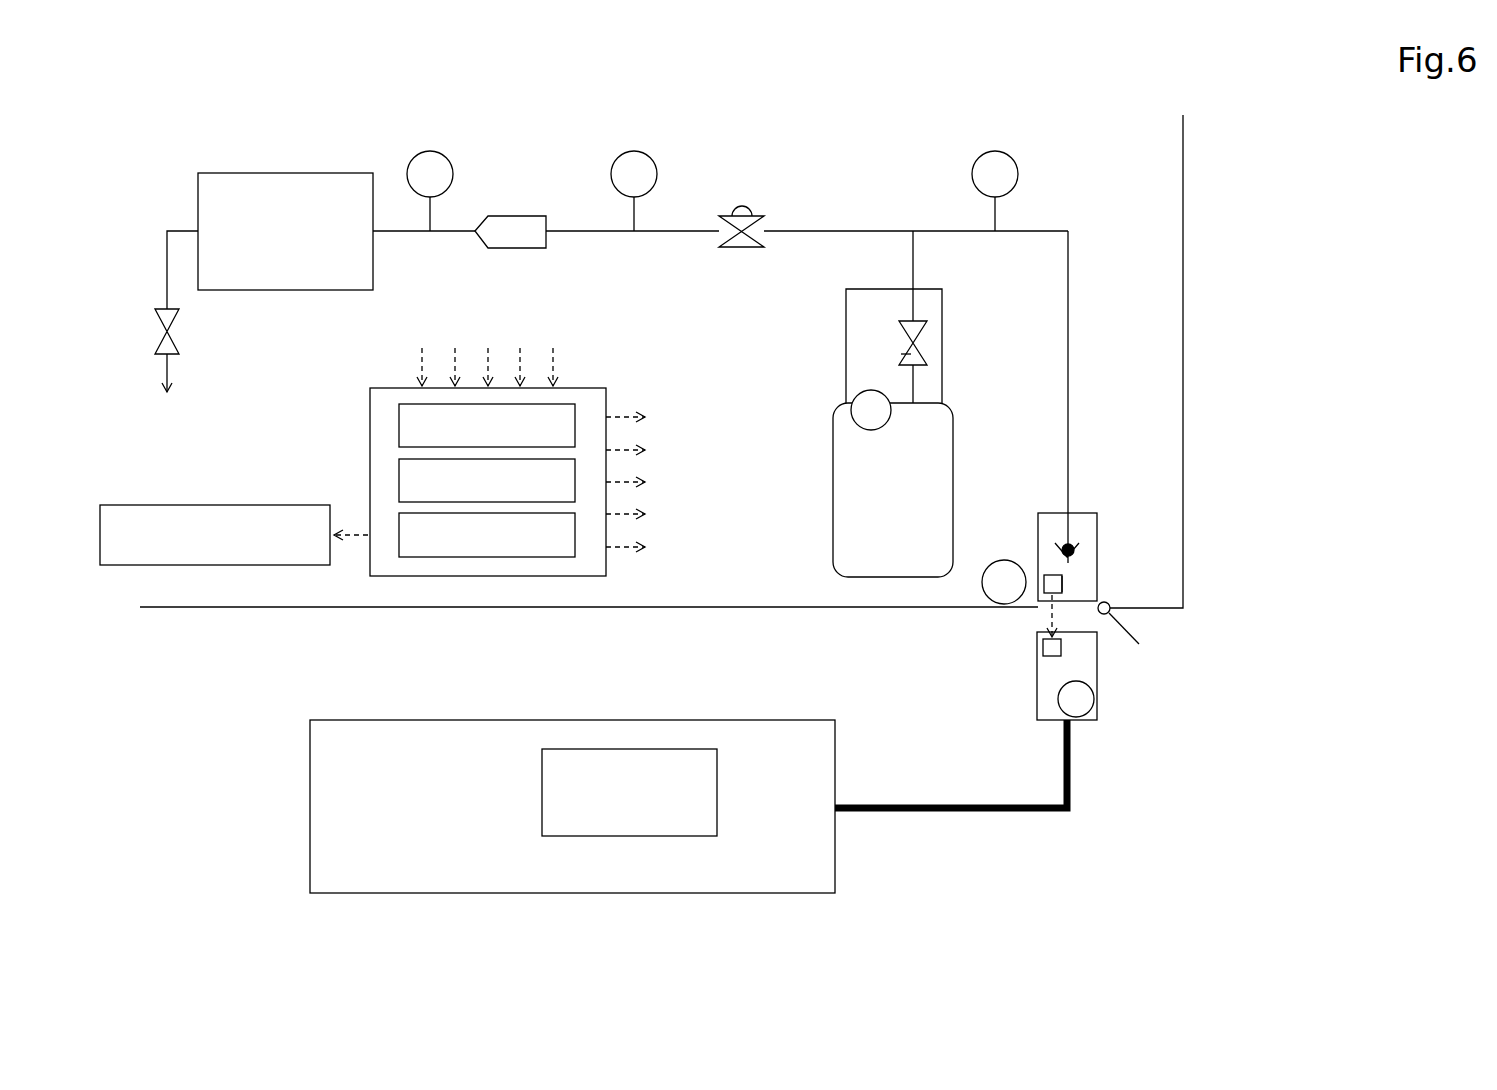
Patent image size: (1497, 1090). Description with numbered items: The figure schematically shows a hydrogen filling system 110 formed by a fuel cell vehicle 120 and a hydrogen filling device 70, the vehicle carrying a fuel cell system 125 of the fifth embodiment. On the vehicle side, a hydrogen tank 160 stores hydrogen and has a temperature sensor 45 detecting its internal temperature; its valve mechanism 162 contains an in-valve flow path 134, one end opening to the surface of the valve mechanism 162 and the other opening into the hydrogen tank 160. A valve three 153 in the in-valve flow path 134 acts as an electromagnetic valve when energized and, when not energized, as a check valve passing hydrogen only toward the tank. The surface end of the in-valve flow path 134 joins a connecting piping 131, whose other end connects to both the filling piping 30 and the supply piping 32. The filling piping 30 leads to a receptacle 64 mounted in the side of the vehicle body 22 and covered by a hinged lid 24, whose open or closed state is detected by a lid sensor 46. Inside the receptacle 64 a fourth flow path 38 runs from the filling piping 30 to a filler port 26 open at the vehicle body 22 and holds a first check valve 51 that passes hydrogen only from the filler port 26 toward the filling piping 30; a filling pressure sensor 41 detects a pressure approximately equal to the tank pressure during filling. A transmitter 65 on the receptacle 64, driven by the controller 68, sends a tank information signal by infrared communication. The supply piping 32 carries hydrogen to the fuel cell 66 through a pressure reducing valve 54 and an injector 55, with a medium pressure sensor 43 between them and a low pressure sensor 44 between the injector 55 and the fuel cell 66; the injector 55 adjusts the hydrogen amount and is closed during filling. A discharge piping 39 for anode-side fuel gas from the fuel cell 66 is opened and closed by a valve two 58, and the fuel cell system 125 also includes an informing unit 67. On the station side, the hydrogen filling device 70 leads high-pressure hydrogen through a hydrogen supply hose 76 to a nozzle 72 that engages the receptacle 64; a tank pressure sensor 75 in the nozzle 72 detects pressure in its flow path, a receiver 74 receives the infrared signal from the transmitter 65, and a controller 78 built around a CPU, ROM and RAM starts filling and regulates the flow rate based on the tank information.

The vehicle body 22 is at (1183, 316).
The lid 24 is at (1130, 632).
The filler port 26 is at (1095, 620).
The filling piping 30 is at (1068, 384).
The supply piping 32 is at (593, 233).
The fourth flow path 38 is at (1068, 582).
The discharge piping 39 is at (165, 246).
The filling pressure sensor 41 is at (993, 151).
The medium pressure sensor 43 is at (632, 151).
The low pressure sensor 44 is at (427, 151).
The temperature sensor 45 is at (864, 429).
The lid sensor 46 is at (985, 597).
The first check valve 51 is at (1070, 543).
The pressure reducing valve 54 is at (743, 206).
The injector 55 is at (512, 216).
The valve two 58 is at (178, 331).
The receptacle 64 is at (1097, 556).
The transmitter 65 is at (1044, 575).
The fuel cell 66 is at (283, 173).
The informing unit 67 is at (234, 505).
The controller 68 is at (380, 388).
The hydrogen filling device 70 is at (288, 757).
The nozzle 72 is at (1037, 703).
The receiver 74 is at (1043, 646).
The tank pressure sensor 75 is at (1094, 700).
The hydrogen supply hose 76 is at (1071, 768).
The controller 78 is at (717, 790).
The hydrogen filling system 110 is at (1290, 130).
The fuel cell vehicle 120 is at (1192, 268).
The fuel cell system 125 is at (1110, 100).
The connecting piping 131 is at (913, 258).
The in-valve flow path 134 is at (913, 304).
The valve three 153 is at (900, 354).
The hydrogen tank 160 is at (953, 461).
The valve mechanism 162 is at (942, 344).